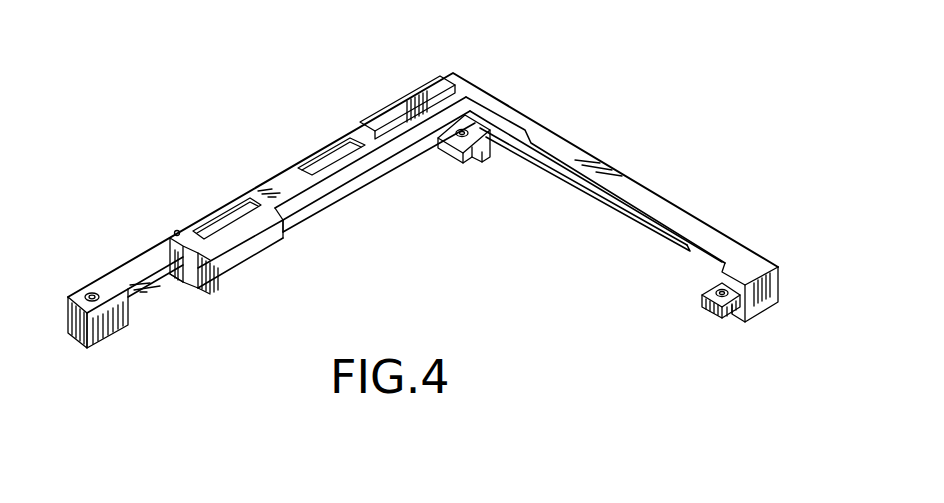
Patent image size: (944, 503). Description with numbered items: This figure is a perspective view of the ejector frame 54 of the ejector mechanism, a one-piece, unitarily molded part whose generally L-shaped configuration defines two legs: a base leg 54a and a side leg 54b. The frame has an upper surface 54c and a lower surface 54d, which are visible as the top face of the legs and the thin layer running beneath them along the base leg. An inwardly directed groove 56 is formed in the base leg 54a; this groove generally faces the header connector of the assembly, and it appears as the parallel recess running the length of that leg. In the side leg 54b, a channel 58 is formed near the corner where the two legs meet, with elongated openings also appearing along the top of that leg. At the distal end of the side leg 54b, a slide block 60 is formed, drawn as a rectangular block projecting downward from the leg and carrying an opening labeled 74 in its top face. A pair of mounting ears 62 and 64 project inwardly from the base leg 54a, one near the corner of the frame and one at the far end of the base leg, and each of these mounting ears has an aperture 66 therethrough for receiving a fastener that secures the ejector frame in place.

The ejector frame 54 is at (515, 93).
The base leg 54a is at (665, 200).
The side leg 54b is at (268, 177).
The upper surface 54c is at (603, 184).
The lower surface 54d is at (617, 218).
The groove 56 is at (557, 173).
The channel 58 is at (400, 118).
The slide block 60 is at (107, 322).
The mounting ear 62 is at (720, 323).
The mounting ear 64 is at (482, 158).
The apertures 66 is at (483, 117).
The hole 74 is at (98, 293).